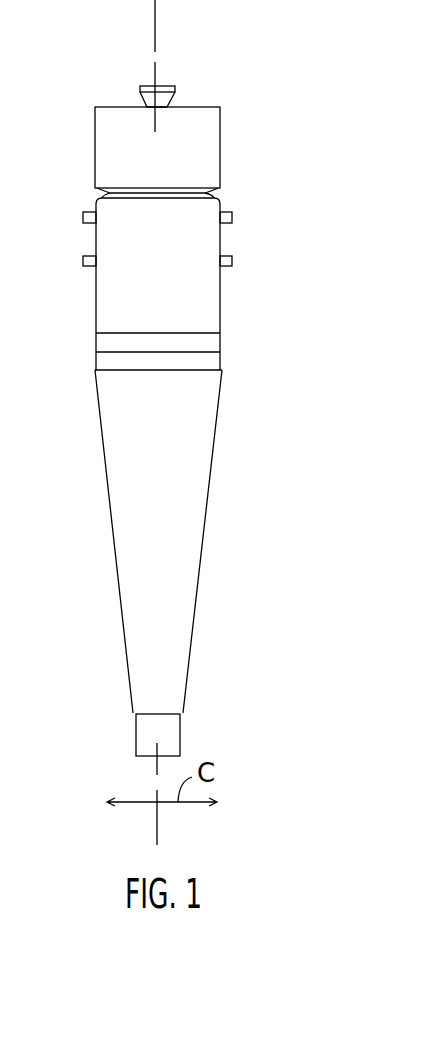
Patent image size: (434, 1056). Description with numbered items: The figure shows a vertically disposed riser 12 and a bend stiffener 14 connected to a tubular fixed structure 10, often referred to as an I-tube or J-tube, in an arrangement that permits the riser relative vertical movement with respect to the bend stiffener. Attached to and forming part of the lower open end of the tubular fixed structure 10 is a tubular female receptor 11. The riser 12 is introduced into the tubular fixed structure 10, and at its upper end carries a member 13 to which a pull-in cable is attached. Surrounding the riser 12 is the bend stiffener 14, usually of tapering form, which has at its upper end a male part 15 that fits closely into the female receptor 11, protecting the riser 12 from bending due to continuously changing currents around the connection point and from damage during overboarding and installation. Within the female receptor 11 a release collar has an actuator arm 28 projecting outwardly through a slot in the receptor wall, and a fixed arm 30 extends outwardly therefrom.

The tubular fixed structure 10 is at (122, 128).
The tubular female receptor 11 is at (203, 310).
The riser 12 is at (150, 725).
The member 13 is at (143, 103).
The bend stiffener 14 is at (105, 458).
The male part 15 is at (96, 343).
The actuator arm 28 is at (83, 217).
The fixed arm 30 is at (83, 263).